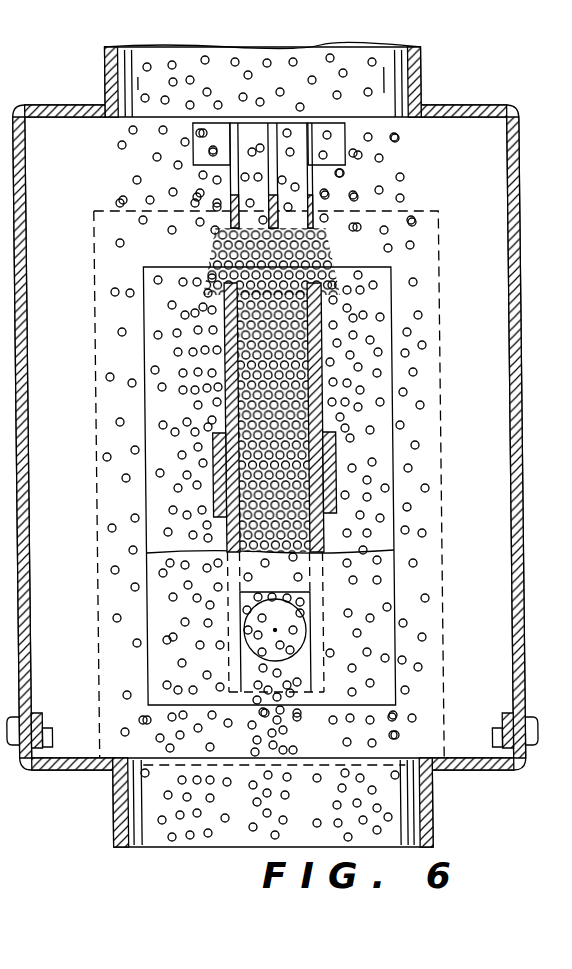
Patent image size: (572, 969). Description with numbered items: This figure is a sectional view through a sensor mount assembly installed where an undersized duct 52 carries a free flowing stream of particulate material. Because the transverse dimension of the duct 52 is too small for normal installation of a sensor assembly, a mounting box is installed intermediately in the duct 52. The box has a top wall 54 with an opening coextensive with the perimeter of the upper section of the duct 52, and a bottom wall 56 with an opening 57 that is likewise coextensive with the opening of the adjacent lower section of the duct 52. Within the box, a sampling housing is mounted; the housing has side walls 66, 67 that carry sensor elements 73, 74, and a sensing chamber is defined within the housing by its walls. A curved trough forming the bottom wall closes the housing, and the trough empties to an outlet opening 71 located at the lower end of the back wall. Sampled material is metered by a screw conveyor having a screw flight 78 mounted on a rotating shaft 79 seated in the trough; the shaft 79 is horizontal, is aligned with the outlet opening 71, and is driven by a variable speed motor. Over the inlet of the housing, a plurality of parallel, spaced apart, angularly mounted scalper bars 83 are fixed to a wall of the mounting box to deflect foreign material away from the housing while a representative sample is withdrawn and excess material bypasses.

The duct 52 is at (421, 68).
The top wall 54 is at (464, 100).
The bottom wall 56 is at (85, 772).
The opening 57 is at (190, 745).
The side wall 66 is at (322, 315).
The side wall 67 is at (225, 355).
The outlet opening 71 is at (268, 660).
The sensor element 73 is at (335, 452).
The sensor element 74 is at (213, 500).
The screw flight 78 is at (315, 610).
The rotating shaft 79 is at (245, 630).
The scalper bars 83 is at (230, 188).